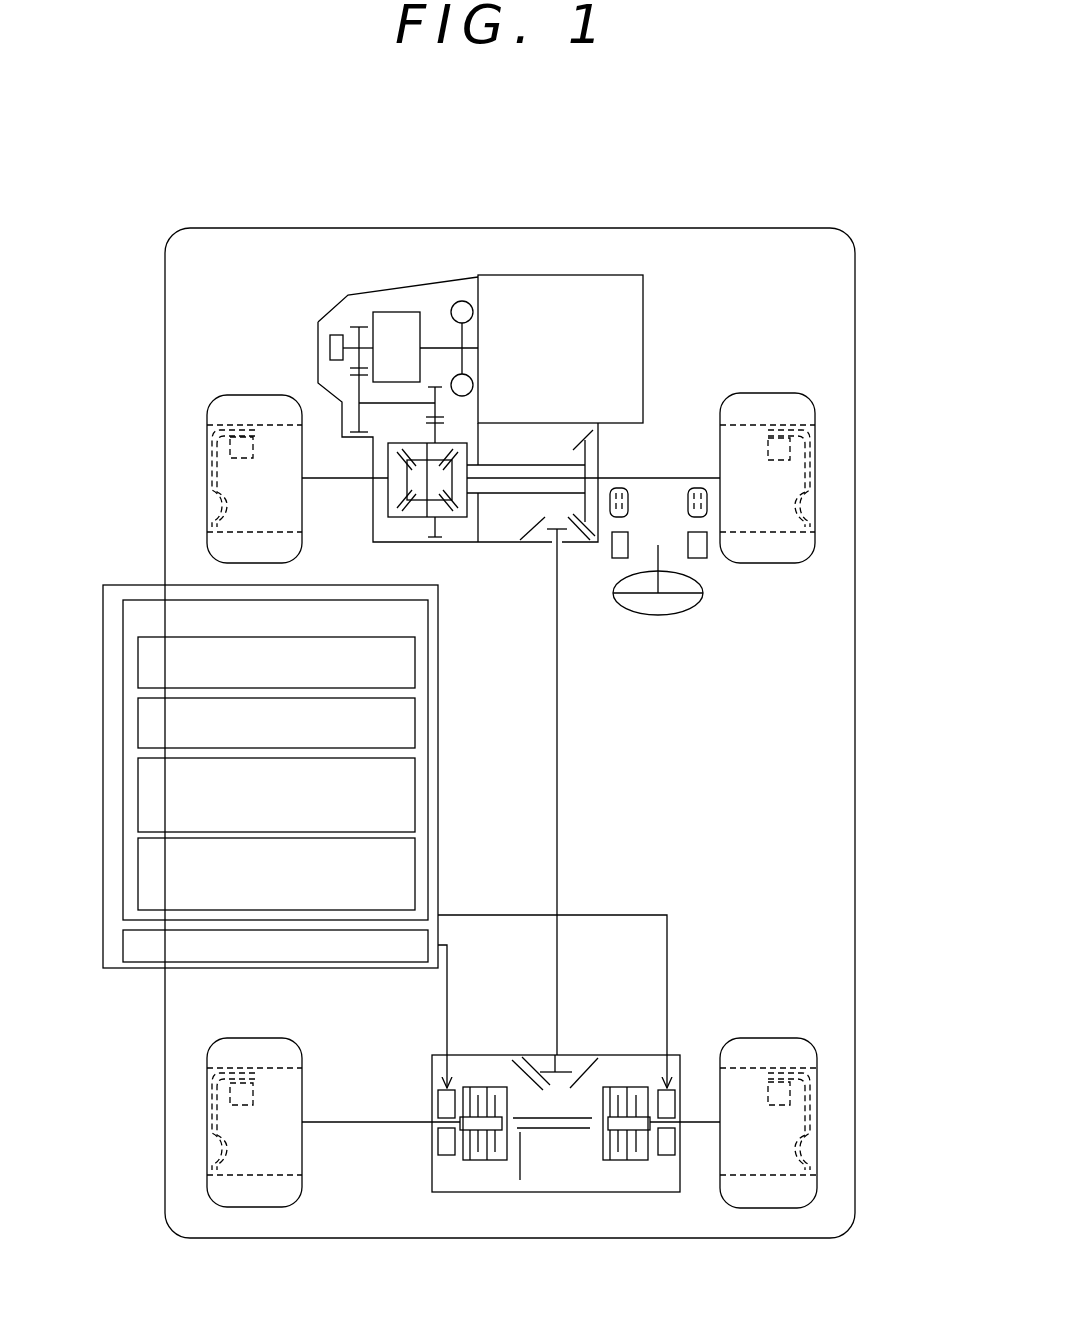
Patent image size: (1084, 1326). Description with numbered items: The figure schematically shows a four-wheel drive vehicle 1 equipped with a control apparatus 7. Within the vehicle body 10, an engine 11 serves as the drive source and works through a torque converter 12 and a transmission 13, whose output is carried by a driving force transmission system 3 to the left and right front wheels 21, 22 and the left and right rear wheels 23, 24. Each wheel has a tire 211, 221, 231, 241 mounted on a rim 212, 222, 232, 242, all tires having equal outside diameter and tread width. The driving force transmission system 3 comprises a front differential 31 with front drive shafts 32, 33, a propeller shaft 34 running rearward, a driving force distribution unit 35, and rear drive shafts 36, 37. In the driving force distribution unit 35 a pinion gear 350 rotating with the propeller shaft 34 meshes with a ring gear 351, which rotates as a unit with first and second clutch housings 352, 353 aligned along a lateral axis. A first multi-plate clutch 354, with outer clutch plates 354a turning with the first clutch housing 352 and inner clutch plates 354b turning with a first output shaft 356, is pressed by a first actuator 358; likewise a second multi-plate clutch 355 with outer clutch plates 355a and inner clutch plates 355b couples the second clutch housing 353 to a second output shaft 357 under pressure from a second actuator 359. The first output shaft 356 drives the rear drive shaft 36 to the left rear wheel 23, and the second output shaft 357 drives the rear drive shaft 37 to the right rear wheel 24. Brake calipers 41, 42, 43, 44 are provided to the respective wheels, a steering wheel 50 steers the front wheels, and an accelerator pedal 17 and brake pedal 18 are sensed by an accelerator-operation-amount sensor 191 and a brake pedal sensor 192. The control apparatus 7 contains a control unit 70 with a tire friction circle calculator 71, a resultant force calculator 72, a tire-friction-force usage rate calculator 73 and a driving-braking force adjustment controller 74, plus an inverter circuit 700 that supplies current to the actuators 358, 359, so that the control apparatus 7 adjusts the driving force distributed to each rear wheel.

The four-wheel drive vehicle 1 is at (208, 200).
The driving force transmission system 3 is at (628, 458).
The control apparatus 7 is at (353, 809).
The vehicle body 10 is at (722, 228).
The engine 11 is at (603, 275).
The torque converter 12 is at (448, 293).
The transmission 13 is at (380, 300).
The accelerator pedal 17 is at (672, 542).
The brake pedal 18 is at (687, 508).
The accelerator-operation-amount sensor 191 is at (698, 560).
The brake pedal sensor 192 is at (615, 560).
The left front wheel 21 is at (173, 471).
The tire 211 is at (207, 410).
The rim 212 is at (215, 465).
The right front wheel 22 is at (839, 471).
The tire 221 is at (816, 412).
The rim 222 is at (807, 472).
The left rear wheel 23 is at (173, 1118).
The tire 231 is at (207, 1060).
The rim 232 is at (215, 1112).
The right rear wheel 24 is at (839, 1116).
The tire 241 is at (817, 1062).
The rim 242 is at (805, 1122).
The front differential 31 is at (407, 522).
The front drive shaft 32 is at (340, 482).
The front drive shaft 33 is at (666, 478).
The propeller shaft 34 is at (560, 768).
The driving force distribution unit 35 is at (537, 1055).
The pinion gear 350 is at (572, 1065).
The ring gear 351 is at (523, 1110).
The first clutch housing 352 is at (489, 1087).
The second clutch housing 353 is at (613, 1087).
The first multi-plate clutch 354 is at (444, 1162).
The outer clutch plates 354a is at (462, 1156).
The inner clutch plates 354b is at (437, 1142).
The second multi-plate clutch 355 is at (618, 1163).
The outer clutch plates 355a is at (612, 1143).
The inner clutch plates 355b is at (633, 1143).
The first output shaft 356 is at (460, 1120).
The second output shaft 357 is at (512, 1182).
The first actuator 358 is at (437, 1093).
The second actuator 359 is at (677, 1142).
The rear drive shaft 36 is at (343, 1120).
The rear drive shaft 37 is at (690, 1118).
The brake caliper 41 is at (238, 437).
The brake caliper 42 is at (780, 437).
The brake caliper 43 is at (238, 1083).
The brake caliper 44 is at (782, 1080).
The steering wheel 50 is at (658, 615).
The control unit 70 is at (123, 622).
The tire friction circle calculator 71 is at (138, 660).
The resultant force calculator 72 is at (138, 720).
The tire-friction-force usage rate calculator 73 is at (138, 792).
The driving-braking force adjustment controller 74 is at (138, 866).
The inverter circuit 700 is at (123, 945).